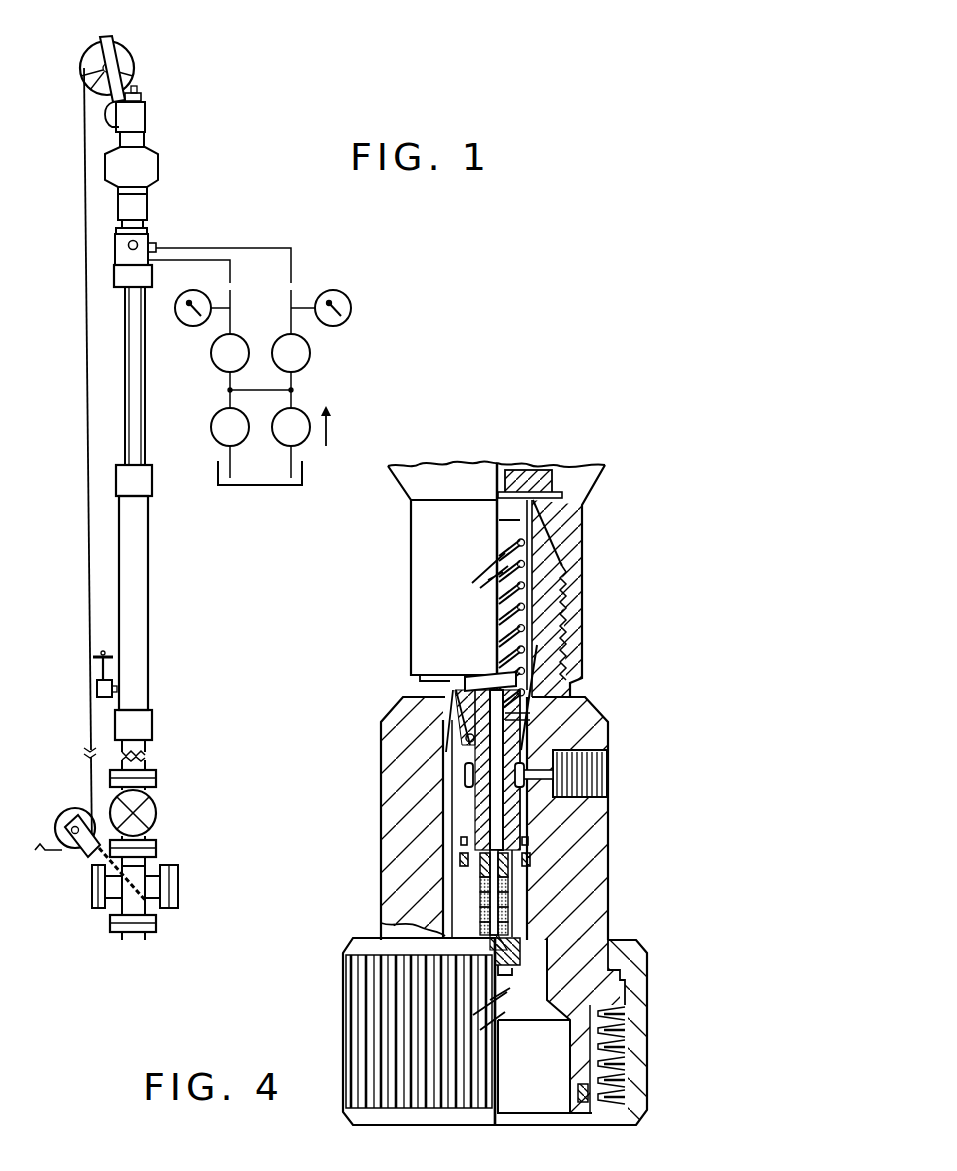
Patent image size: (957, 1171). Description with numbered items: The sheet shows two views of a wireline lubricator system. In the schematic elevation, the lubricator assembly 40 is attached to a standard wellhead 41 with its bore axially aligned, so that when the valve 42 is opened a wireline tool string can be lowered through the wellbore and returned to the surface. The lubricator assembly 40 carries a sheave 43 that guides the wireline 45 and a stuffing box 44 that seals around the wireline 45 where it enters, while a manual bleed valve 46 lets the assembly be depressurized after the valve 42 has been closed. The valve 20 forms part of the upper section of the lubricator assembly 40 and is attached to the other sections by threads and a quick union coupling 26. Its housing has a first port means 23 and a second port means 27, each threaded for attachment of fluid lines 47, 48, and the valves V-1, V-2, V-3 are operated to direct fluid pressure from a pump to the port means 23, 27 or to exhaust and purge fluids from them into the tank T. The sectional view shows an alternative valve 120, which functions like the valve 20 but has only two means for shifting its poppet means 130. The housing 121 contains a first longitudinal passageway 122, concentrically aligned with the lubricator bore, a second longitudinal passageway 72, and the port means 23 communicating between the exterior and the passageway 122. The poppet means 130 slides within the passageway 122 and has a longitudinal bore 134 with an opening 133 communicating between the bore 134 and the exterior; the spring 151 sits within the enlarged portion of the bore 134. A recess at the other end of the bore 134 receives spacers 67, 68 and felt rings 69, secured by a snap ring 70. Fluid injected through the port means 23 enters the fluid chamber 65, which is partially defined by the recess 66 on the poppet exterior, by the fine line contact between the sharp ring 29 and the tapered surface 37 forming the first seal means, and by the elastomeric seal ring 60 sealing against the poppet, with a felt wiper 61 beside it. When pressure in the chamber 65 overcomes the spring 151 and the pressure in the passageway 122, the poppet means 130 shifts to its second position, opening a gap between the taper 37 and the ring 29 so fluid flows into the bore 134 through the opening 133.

In FIG. 1, the lubricator assembly 40 is at (184, 131).
In FIG. 1, the sheave 43 is at (118, 46).
In FIG. 1, the stuffing box 44 is at (148, 104).
In FIG. 1, the valve 20 is at (148, 234).
In FIG. 1, the first port means 23 is at (129, 246).
In FIG. 4, the first port means 23 is at (607, 758).
In FIG. 1, the second port means 27 is at (157, 247).
In FIG. 1, the wireline 45 is at (86, 298).
In FIG. 1, the wellhead 41 is at (174, 810).
In FIG. 1, the valve 42 is at (160, 826).
In FIG. 1, the manual bleed valve 46 is at (98, 653).
In FIG. 1, the fluid line 47 is at (210, 260).
In FIG. 1, the fluid line 48 is at (289, 248).
In FIG. 1, the valve V-1 is at (308, 362).
In FIG. 1, the valve V-2 is at (214, 425).
In FIG. 1, the valve V-3 is at (216, 362).
In FIG. 1, the tank T is at (258, 479).
In FIG. 4, the valve 120 is at (628, 702).
In FIG. 4, the housing 121 is at (600, 826).
In FIG. 4, the first longitudinal passageway 122 is at (546, 1084).
In FIG. 4, the poppet means 130 is at (467, 702).
In FIG. 4, the opening 133 is at (524, 715).
In FIG. 4, the longitudinal bore 134 is at (492, 813).
In FIG. 4, the spring 151 is at (513, 566).
In FIG. 4, the tapered surface 37 is at (460, 720).
In FIG. 4, the ring 29 is at (466, 740).
In FIG. 4, the recess 66 is at (464, 774).
In FIG. 4, the second longitudinal passageway 72 is at (445, 797).
In FIG. 4, the spacer 68 is at (486, 870).
In FIG. 4, the felt rings 69 is at (487, 921).
In FIG. 4, the elastomeric seal ring 60 is at (529, 840).
In FIG. 4, the felt wiper 61 is at (530, 858).
In FIG. 4, the fluid chamber 65 is at (596, 779).
In FIG. 4, the spacer 67 is at (503, 951).
In FIG. 4, the snap ring 70 is at (503, 974).
In FIG. 4, the quick union coupling 26 is at (634, 971).